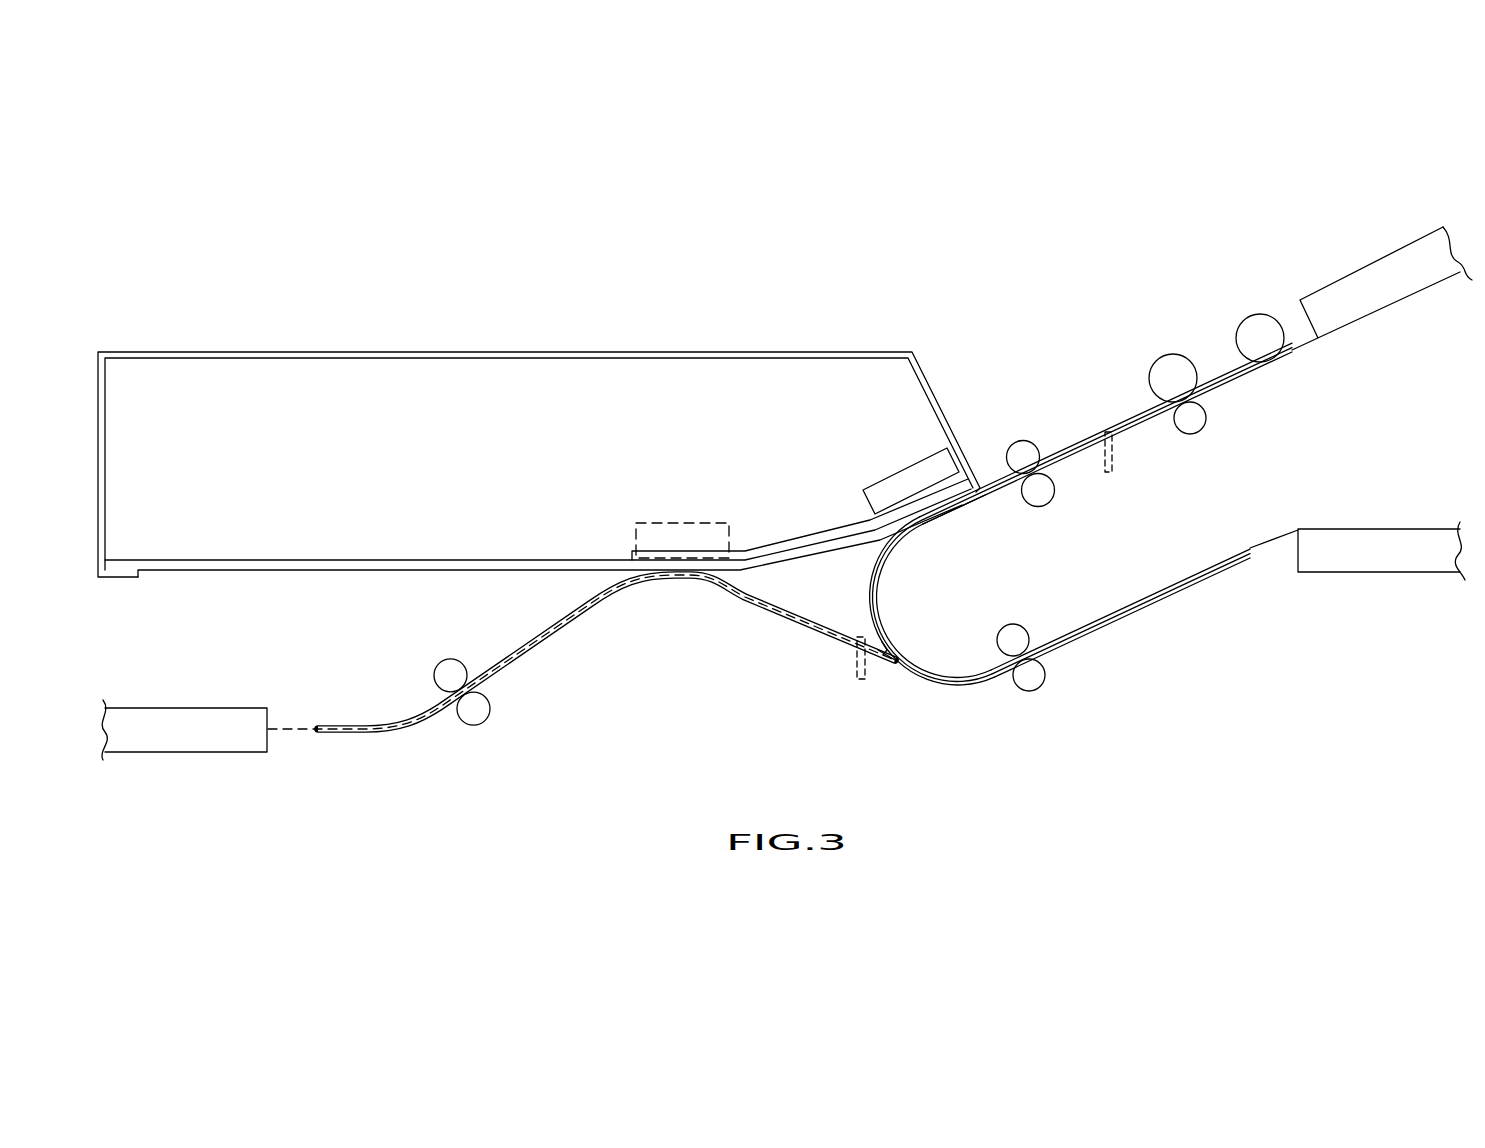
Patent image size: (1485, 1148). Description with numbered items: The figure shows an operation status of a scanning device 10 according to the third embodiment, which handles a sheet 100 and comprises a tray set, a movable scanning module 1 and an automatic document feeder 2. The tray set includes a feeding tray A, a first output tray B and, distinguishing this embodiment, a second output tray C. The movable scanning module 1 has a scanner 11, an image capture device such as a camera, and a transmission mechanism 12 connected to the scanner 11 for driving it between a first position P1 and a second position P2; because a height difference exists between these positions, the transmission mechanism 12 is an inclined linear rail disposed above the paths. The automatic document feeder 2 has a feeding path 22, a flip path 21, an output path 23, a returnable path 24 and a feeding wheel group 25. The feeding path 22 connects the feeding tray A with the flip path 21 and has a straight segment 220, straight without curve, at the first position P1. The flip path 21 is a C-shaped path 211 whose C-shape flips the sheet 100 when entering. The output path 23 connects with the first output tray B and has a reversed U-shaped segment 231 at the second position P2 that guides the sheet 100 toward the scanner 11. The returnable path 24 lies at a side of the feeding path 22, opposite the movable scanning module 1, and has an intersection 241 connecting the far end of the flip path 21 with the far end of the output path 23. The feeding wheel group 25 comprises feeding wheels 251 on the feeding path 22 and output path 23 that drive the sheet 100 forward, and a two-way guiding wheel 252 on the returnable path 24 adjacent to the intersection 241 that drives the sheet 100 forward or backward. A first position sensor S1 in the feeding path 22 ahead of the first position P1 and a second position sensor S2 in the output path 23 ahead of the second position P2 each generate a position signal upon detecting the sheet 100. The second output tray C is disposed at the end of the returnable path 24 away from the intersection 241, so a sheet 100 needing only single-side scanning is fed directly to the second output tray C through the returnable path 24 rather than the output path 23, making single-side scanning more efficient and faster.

The scanning device 10 is at (797, 178).
The movable scanning module 1 is at (800, 480).
The scanner 11 is at (888, 480).
The transmission mechanism 12 is at (806, 537).
The automatic document feeder 2 is at (863, 500).
The flip path 21 is at (882, 596).
The C-shaped path 211 is at (878, 610).
The feeding path 22 is at (1072, 436).
The straight segment 220 is at (958, 516).
The output path 23 is at (768, 612).
The reversed U-shaped segment 231 is at (680, 579).
The returnable path 24 is at (1145, 610).
The intersection 241 is at (893, 672).
The feeding wheel group 25 is at (859, 500).
The feeding wheel 251 is at (1155, 380).
The two-way guiding wheel 252 is at (1030, 686).
The sheet 100 is at (1273, 537).
The first position P1 is at (900, 462).
The second position P2 is at (677, 518).
The first position sensor S1 is at (1112, 455).
The second position sensor S2 is at (861, 680).
The feeding tray A is at (1375, 277).
The first output tray B is at (186, 740).
The second output tray C is at (1372, 558).